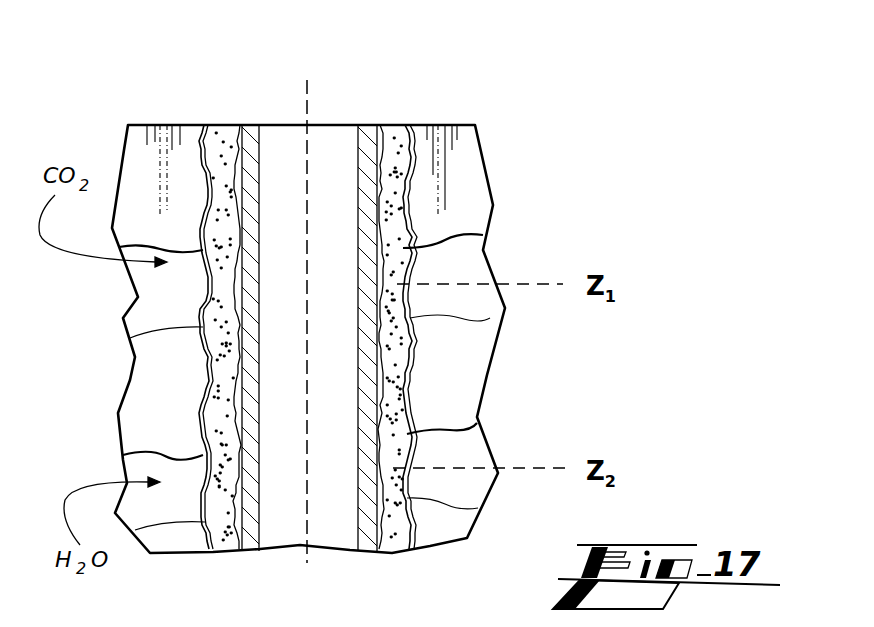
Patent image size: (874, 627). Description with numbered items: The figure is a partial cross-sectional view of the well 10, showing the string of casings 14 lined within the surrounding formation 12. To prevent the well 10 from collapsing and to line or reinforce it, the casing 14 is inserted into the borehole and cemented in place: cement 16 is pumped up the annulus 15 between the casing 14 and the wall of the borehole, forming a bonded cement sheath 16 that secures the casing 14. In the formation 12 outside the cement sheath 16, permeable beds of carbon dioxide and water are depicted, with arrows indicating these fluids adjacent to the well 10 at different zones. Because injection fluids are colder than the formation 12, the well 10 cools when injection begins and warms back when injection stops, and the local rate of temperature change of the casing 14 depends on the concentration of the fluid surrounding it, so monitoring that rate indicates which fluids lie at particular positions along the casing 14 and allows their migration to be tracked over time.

The well 10 is at (277, 97).
The formation 12 is at (180, 410).
The casing 14 is at (328, 137).
The annulus 15 is at (388, 430).
The cement sheath 16 is at (309, 338).